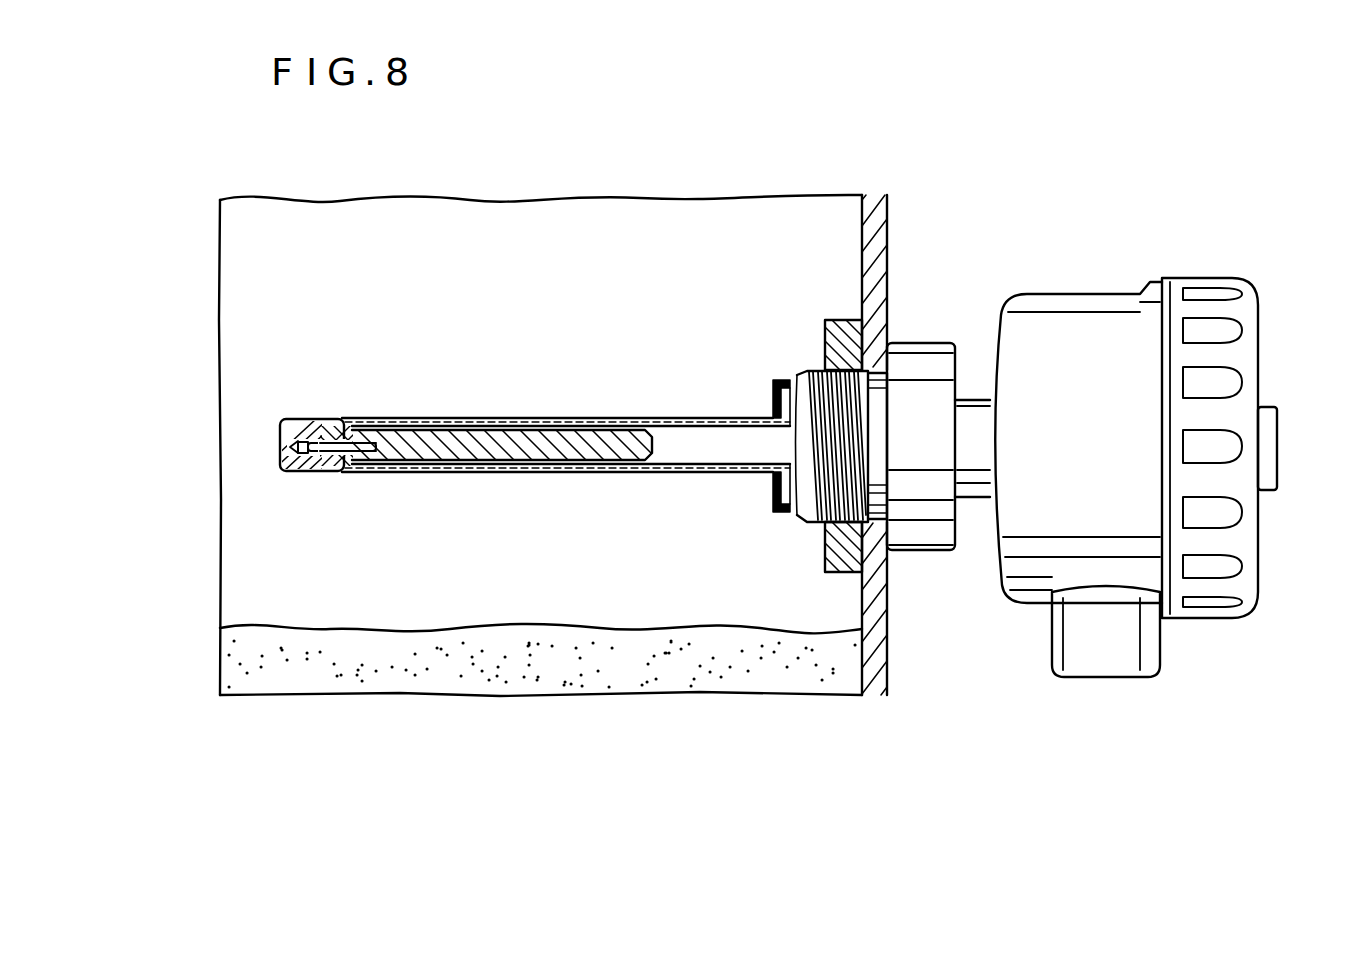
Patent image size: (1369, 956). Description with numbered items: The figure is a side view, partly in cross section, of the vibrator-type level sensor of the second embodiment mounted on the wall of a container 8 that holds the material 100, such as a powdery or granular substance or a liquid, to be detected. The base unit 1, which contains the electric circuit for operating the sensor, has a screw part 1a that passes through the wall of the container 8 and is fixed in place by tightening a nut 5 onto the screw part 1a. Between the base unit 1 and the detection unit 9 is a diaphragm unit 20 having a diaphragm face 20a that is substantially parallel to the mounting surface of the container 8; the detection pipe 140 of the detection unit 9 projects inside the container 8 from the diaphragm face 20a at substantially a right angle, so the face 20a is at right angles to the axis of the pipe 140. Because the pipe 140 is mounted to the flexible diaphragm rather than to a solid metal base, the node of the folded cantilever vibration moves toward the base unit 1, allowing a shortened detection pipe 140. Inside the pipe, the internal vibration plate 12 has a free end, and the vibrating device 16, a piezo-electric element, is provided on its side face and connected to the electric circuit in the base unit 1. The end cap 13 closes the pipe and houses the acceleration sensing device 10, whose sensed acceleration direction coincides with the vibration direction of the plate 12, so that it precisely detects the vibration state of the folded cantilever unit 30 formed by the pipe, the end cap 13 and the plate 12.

The base unit 1 is at (1072, 308).
The screw part 1a is at (807, 372).
The nut 5 is at (845, 320).
The container 8 is at (875, 240).
The detection unit 9 is at (562, 417).
The acceleration sensing device 10 is at (313, 423).
The internal vibration plate 12 is at (520, 455).
The end cap 13 is at (290, 475).
The vibrating device 16 is at (403, 437).
The diaphragm unit 20 is at (785, 378).
The diaphragm face 20a is at (767, 485).
The folded cantilever unit 30 is at (432, 473).
The material 100 is at (740, 680).
The detection pipe 140 is at (635, 474).